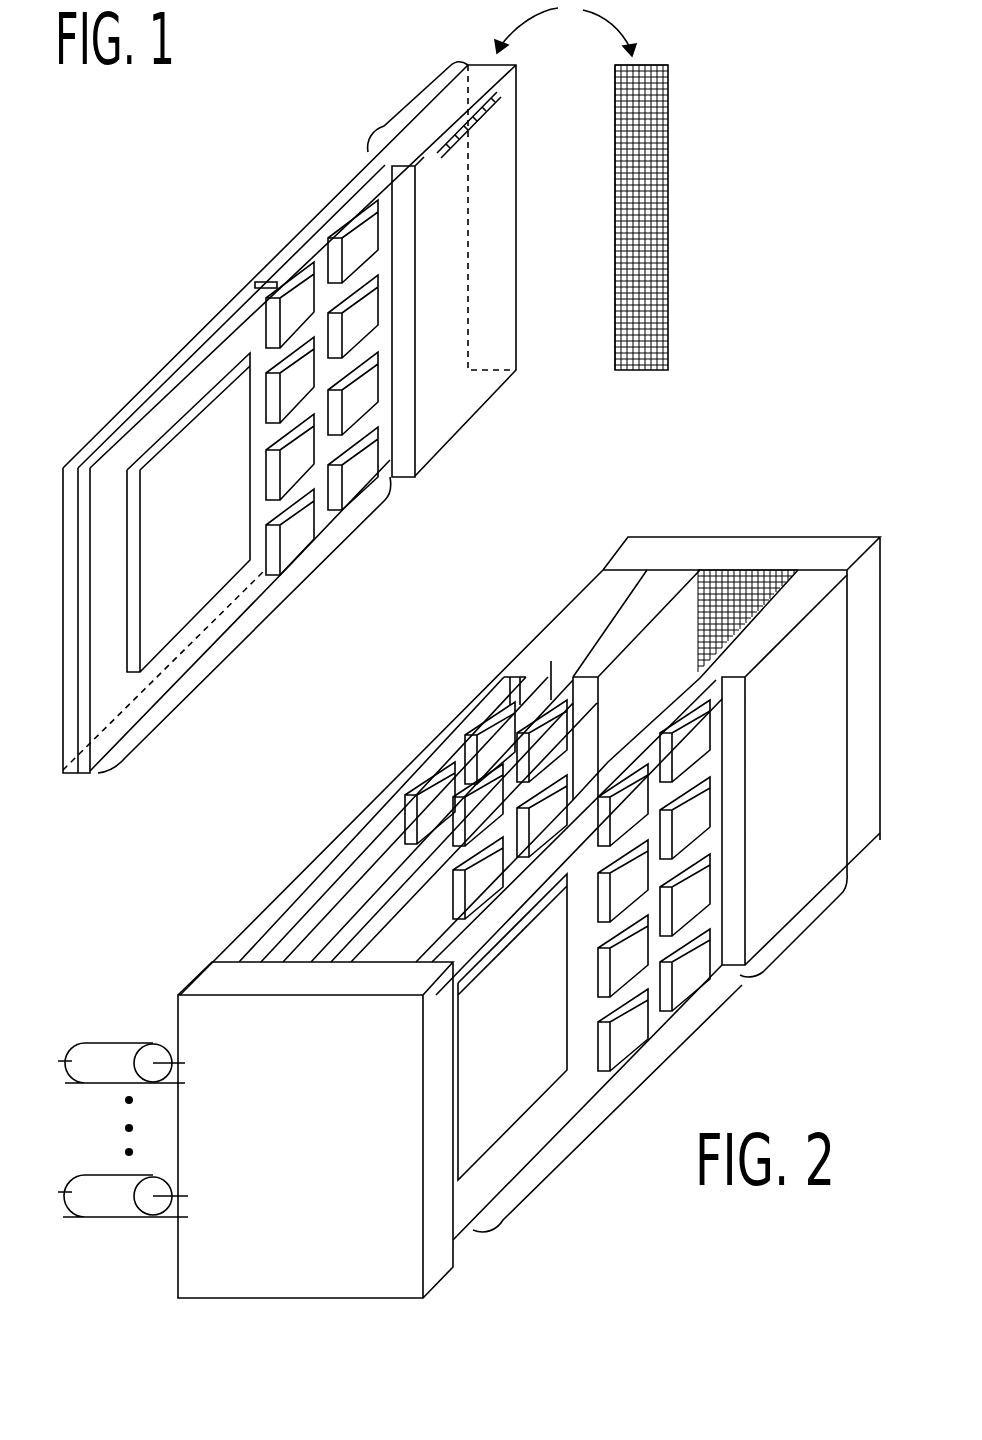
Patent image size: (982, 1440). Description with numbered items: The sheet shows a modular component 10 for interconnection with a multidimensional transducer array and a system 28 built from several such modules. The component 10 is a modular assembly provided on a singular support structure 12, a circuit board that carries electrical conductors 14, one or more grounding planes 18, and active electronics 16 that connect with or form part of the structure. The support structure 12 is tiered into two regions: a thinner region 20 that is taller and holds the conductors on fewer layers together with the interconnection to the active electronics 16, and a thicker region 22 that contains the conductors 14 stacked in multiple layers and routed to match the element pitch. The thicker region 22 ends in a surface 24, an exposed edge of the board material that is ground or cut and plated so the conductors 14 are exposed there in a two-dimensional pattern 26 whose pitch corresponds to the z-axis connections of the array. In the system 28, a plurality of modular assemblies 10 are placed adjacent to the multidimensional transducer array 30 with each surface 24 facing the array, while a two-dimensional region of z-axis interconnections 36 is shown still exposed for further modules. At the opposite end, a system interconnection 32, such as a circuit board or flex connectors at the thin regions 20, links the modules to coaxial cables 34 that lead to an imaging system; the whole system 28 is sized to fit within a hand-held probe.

In FIG. 1, the component 10 is at (268, 90).
In FIG. 2, the component 10 is at (557, 650).
In FIG. 1, the singular support structure 12 is at (153, 375).
In FIG. 1, the electrical conductors 14 is at (493, 108).
In FIG. 1, the active electronics 16 is at (372, 441).
In FIG. 2, the active electronics 16 is at (530, 717).
In FIG. 1, the grounding plane 18 is at (203, 338).
In FIG. 1, the thinner region 20 is at (257, 632).
In FIG. 2, the thinner region 20 is at (638, 1082).
In FIG. 1, the thicker region 22 is at (370, 152).
In FIG. 2, the thicker region 22 is at (798, 934).
In FIG. 1, the surface 24 is at (487, 62).
In FIG. 1, the multidimensional exposure pattern 26 is at (615, 378).
In FIG. 2, the system 28 is at (172, 885).
In FIG. 2, the multidimensional transducer array 30 is at (640, 543).
In FIG. 2, the system interconnection 32 is at (365, 1300).
In FIG. 2, the coaxial cables 34 is at (87, 1043).
In FIG. 2, the z-axis interconnections 36 is at (740, 580).